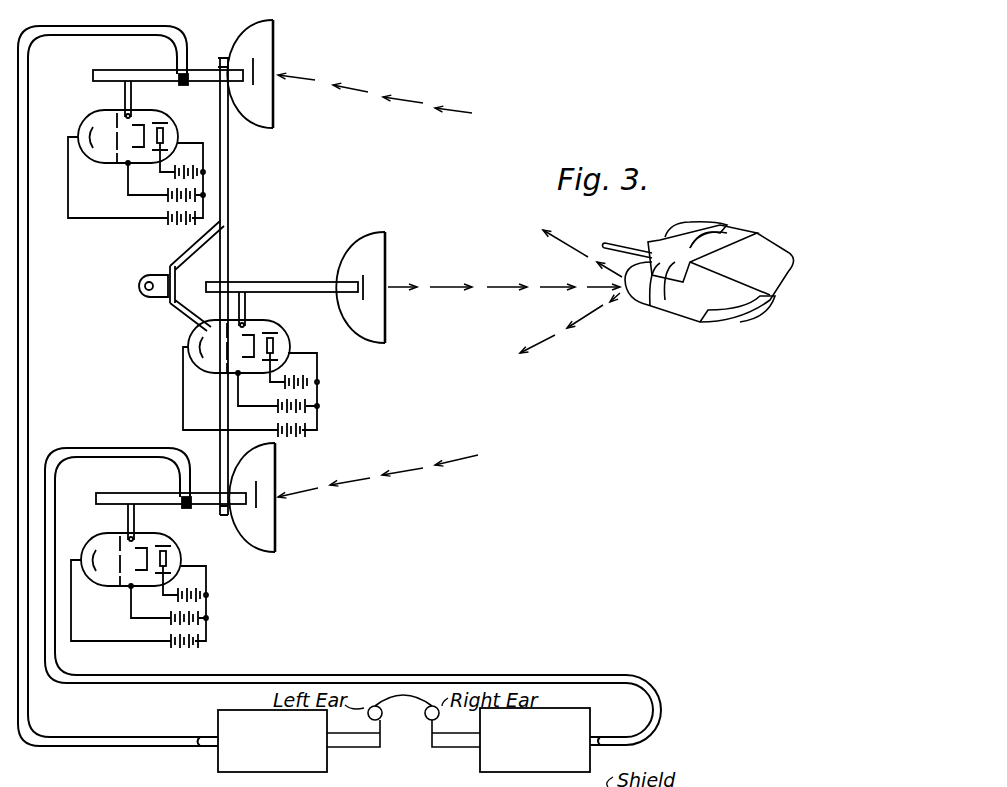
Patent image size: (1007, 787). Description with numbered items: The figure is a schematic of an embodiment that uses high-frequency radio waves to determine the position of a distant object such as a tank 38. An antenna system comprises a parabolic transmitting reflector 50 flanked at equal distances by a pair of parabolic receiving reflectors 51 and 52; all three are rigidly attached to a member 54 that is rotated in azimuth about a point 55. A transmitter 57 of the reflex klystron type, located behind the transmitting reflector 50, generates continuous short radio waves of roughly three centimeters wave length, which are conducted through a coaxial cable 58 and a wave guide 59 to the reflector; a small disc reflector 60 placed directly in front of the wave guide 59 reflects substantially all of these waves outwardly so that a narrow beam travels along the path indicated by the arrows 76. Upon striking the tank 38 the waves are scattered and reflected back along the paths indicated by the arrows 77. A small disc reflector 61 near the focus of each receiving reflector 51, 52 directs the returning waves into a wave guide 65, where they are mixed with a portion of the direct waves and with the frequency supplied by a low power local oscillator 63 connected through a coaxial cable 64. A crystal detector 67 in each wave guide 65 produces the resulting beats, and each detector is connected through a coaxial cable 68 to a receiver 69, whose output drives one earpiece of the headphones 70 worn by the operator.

The tank 38 is at (688, 309).
The parabolic transmitting reflector 50 is at (364, 231).
The parabolic receiving reflector 51 is at (262, 126).
The parabolic receiving reflector 52 is at (267, 553).
The member 54 is at (229, 247).
The point 55 is at (141, 297).
The transmitter 57 is at (284, 328).
The coaxial cable 58 is at (247, 313).
The wave guide 59 is at (286, 281).
The small disc reflector 60 is at (366, 281).
The small disc reflector 61 is at (255, 68).
The local oscillator 63 is at (92, 113).
The coaxial cable 64 is at (133, 100).
The wave guide 65 is at (164, 56).
The crystal detector 67 is at (186, 85).
The coaxial cable 68 is at (30, 322).
The receiver 69 is at (216, 716).
The headphones 70 is at (408, 701).
The arrows 76 is at (511, 270).
The arrows 77 is at (411, 100).